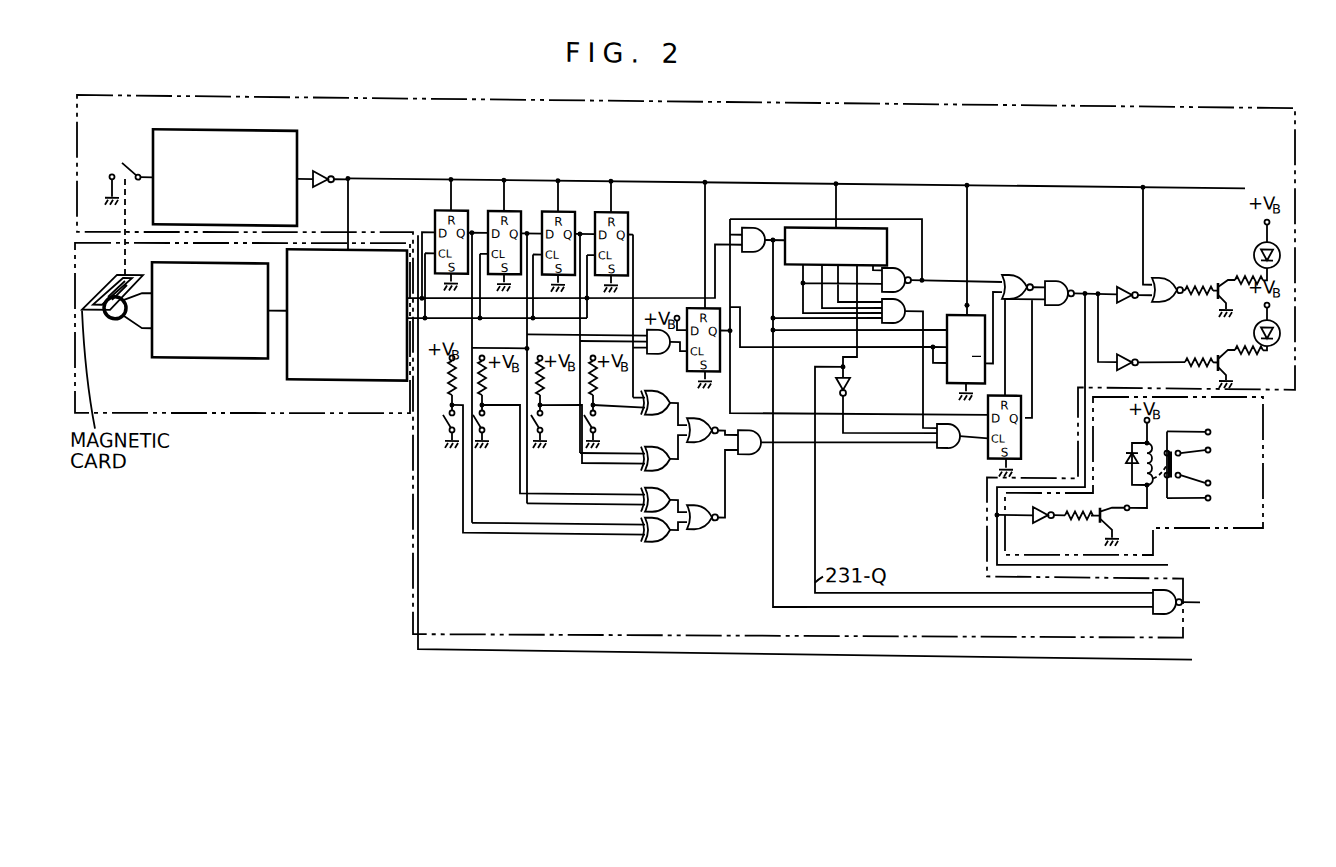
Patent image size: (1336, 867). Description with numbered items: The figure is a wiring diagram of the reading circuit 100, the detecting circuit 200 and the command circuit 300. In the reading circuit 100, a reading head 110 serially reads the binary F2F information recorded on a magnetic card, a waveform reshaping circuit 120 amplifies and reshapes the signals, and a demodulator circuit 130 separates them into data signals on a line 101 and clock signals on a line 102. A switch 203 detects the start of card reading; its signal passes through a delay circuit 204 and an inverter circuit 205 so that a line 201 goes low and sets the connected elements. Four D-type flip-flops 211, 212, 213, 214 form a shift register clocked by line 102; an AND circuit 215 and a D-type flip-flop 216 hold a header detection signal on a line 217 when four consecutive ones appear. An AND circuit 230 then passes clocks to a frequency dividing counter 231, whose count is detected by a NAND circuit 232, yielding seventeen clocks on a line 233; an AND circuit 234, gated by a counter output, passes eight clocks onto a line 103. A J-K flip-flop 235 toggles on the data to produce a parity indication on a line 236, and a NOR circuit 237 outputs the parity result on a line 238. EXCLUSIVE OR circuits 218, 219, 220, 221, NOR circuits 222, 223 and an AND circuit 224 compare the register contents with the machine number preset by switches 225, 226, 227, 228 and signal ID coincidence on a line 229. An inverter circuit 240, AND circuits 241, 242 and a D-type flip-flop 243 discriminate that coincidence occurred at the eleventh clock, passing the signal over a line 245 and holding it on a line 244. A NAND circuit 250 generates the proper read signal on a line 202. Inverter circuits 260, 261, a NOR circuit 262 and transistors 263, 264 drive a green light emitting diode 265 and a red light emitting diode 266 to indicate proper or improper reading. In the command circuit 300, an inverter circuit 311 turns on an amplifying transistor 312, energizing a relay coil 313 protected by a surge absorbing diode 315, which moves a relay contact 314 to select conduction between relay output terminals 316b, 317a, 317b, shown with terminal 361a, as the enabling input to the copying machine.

The reading circuit 100 is at (233, 417).
The data signal line 101 is at (418, 235).
The clock signal line 102 is at (407, 386).
The output clock line 103 is at (1186, 594).
The reading head 110 is at (112, 337).
The waveform reshaping circuit 120 is at (178, 361).
The demodulator circuit 130 is at (345, 382).
The detecting circuit 200 is at (1047, 98).
The reset/set line 201 is at (1190, 179).
The proper read signal line 202 is at (1168, 556).
The switch 203 is at (124, 165).
The delay circuit 204 is at (218, 132).
The inverter circuit 205 is at (328, 162).
The D-type flip-flop 211 is at (442, 210).
The D-type flip-flop 212 is at (495, 210).
The D-type flip-flop 213 is at (549, 210).
The D-type flip-flop 214 is at (603, 210).
The AND circuit 215 is at (670, 352).
The D-type flip-flop 216 is at (724, 353).
The header detection line 217 is at (730, 396).
The EXCLUSIVE OR circuit 218 is at (657, 412).
The EXCLUSIVE OR circuit 219 is at (655, 470).
The EXCLUSIVE OR circuit 220 is at (645, 486).
The EXCLUSIVE OR circuit 221 is at (655, 544).
The NOR circuit 222 is at (703, 441).
The NOR circuit 223 is at (700, 526).
The AND circuit 224 is at (745, 452).
The switch 225 is at (596, 430).
The switch 226 is at (547, 445).
The switch 227 is at (490, 445).
The switch 228 is at (445, 412).
The ID coincidence line 229 is at (772, 455).
The AND circuit 230 is at (752, 248).
The frequency dividing counter 231 is at (852, 223).
The NAND circuit 232 is at (908, 262).
The gated clock line 233 is at (772, 578).
The AND circuit 234 is at (1152, 614).
The J-K flip-flop 235 is at (945, 374).
The parity output line 236 is at (993, 333).
The NOR circuit 237 is at (1010, 268).
The parity check output line 238 is at (1047, 274).
The inverter circuit 240 is at (846, 390).
The AND circuit 241 is at (904, 293).
The AND circuit 242 is at (943, 446).
The D-type flip-flop 243 is at (1022, 446).
The ID discrimination output line 244 is at (1032, 372).
The gated coincidence line 245 is at (978, 440).
The NAND circuit 250 is at (1055, 274).
The inverter circuit 260 is at (1118, 278).
The inverter circuit 261 is at (1120, 346).
The NOR circuit 262 is at (1158, 270).
The transistor 263 is at (1212, 344).
The transistor 264 is at (1216, 276).
The green light emitting diode 265 is at (1255, 327).
The red light emitting diode 266 is at (1254, 238).
The command circuit 300 is at (1222, 520).
The inverter circuit 311 is at (1040, 520).
The amplifying transistor 312 is at (1098, 520).
The relay coil 313 is at (1146, 438).
The relay contact 314 is at (1167, 490).
The surge absorbing diode 315 is at (1131, 462).
The relay output terminal 316b is at (1215, 499).
The relay output terminal 317a is at (1222, 455).
The relay output terminal 317b is at (1222, 481).
The contact terminal 361a is at (1215, 434).